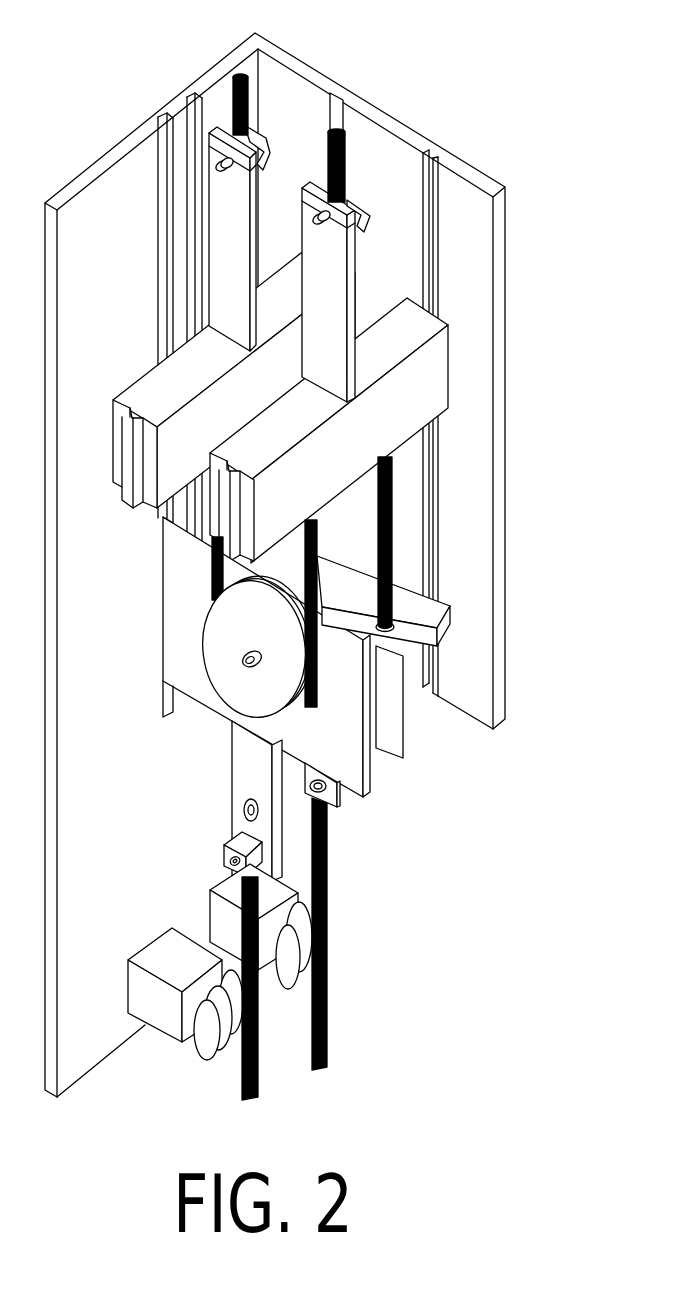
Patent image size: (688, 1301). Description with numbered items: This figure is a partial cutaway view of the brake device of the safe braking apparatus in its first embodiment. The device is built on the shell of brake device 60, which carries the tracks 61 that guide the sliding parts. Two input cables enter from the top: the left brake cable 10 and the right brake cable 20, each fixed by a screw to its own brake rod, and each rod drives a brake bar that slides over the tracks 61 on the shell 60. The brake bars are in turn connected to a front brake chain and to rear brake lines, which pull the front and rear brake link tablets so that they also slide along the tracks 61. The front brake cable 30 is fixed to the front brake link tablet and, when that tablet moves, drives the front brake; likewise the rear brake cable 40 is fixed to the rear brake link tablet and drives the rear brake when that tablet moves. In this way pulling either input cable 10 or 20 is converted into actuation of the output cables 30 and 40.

The left brake cable 10 is at (330, 132).
The right brake cable 20 is at (243, 78).
The front brake cable 30 is at (242, 1074).
The rear brake cable 40 is at (329, 1017).
The shell of brake device 60 is at (390, 113).
The tracks 61 is at (185, 94).